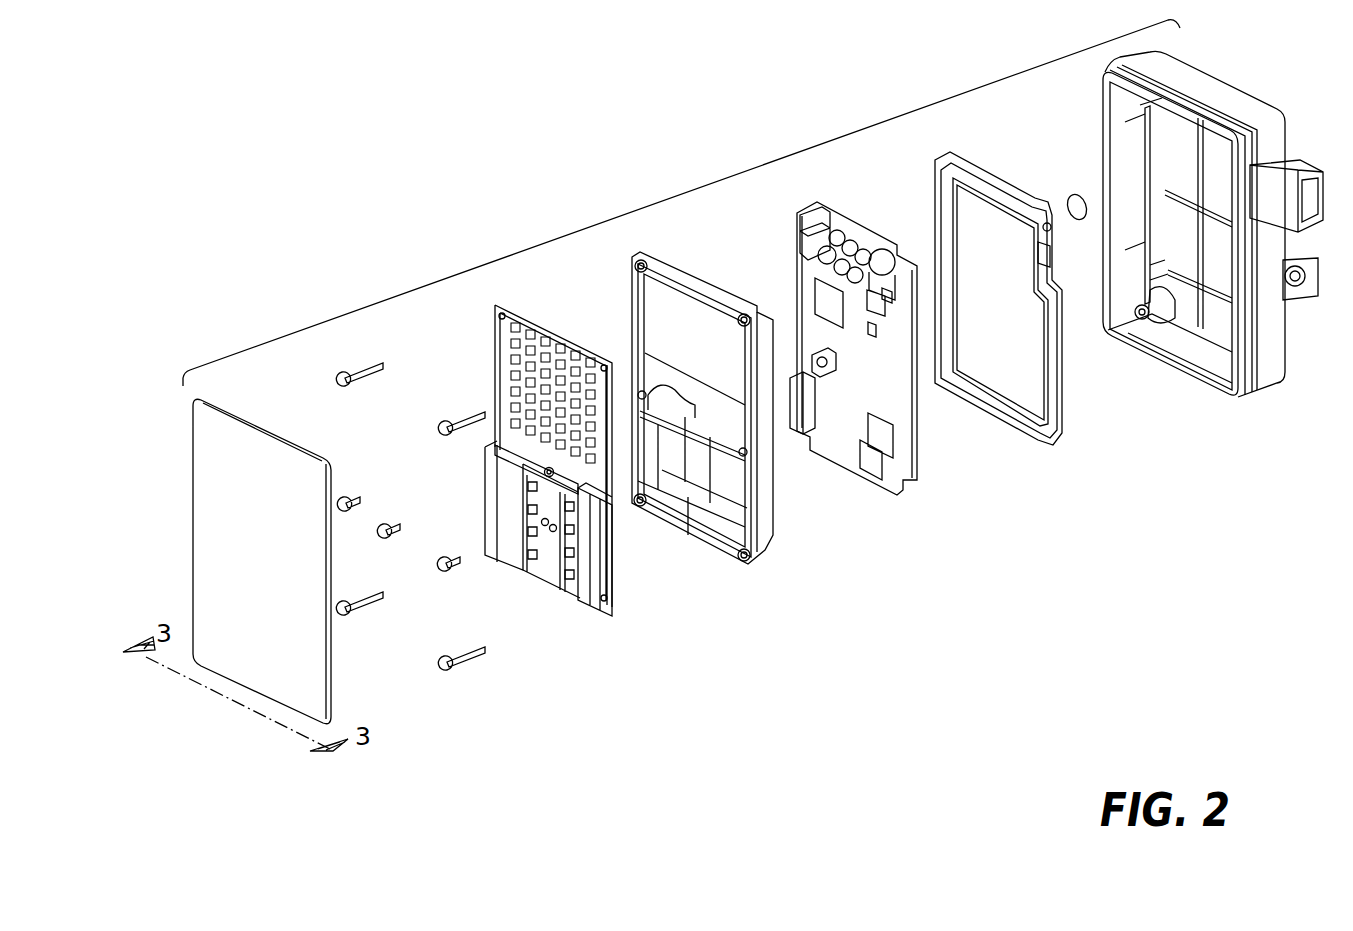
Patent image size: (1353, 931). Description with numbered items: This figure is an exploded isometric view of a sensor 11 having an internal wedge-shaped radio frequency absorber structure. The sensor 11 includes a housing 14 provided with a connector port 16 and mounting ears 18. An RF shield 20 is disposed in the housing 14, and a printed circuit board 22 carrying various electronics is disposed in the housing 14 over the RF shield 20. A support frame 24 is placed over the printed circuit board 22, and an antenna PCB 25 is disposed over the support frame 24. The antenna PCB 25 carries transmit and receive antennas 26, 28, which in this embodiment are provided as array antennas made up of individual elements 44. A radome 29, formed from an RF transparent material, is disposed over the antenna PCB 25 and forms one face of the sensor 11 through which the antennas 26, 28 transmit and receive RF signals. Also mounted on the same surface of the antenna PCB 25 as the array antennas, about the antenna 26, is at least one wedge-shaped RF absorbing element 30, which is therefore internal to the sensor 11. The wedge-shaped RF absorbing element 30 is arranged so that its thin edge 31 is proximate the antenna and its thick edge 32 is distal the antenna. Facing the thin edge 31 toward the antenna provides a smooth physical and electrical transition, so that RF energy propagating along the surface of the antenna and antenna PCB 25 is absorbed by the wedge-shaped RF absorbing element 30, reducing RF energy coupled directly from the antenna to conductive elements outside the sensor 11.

The sensor 11 is at (716, 181).
The housing 14 is at (1178, 372).
The connector port 16 is at (1300, 175).
The mounting ears 18 is at (1300, 300).
The RF shield 20 is at (1038, 450).
The printed circuit board 22 is at (902, 510).
The support frame 24 is at (768, 548).
The antenna PCB 25 is at (615, 558).
The transmit antenna 26 is at (518, 561).
The receive antenna 28 is at (482, 376).
The radome 29 is at (257, 670).
The wedge-shaped RF absorbing element 30 is at (502, 506).
The thin edge 31 is at (527, 469).
The thick edge 32 is at (612, 610).
The elements 44 is at (530, 560).